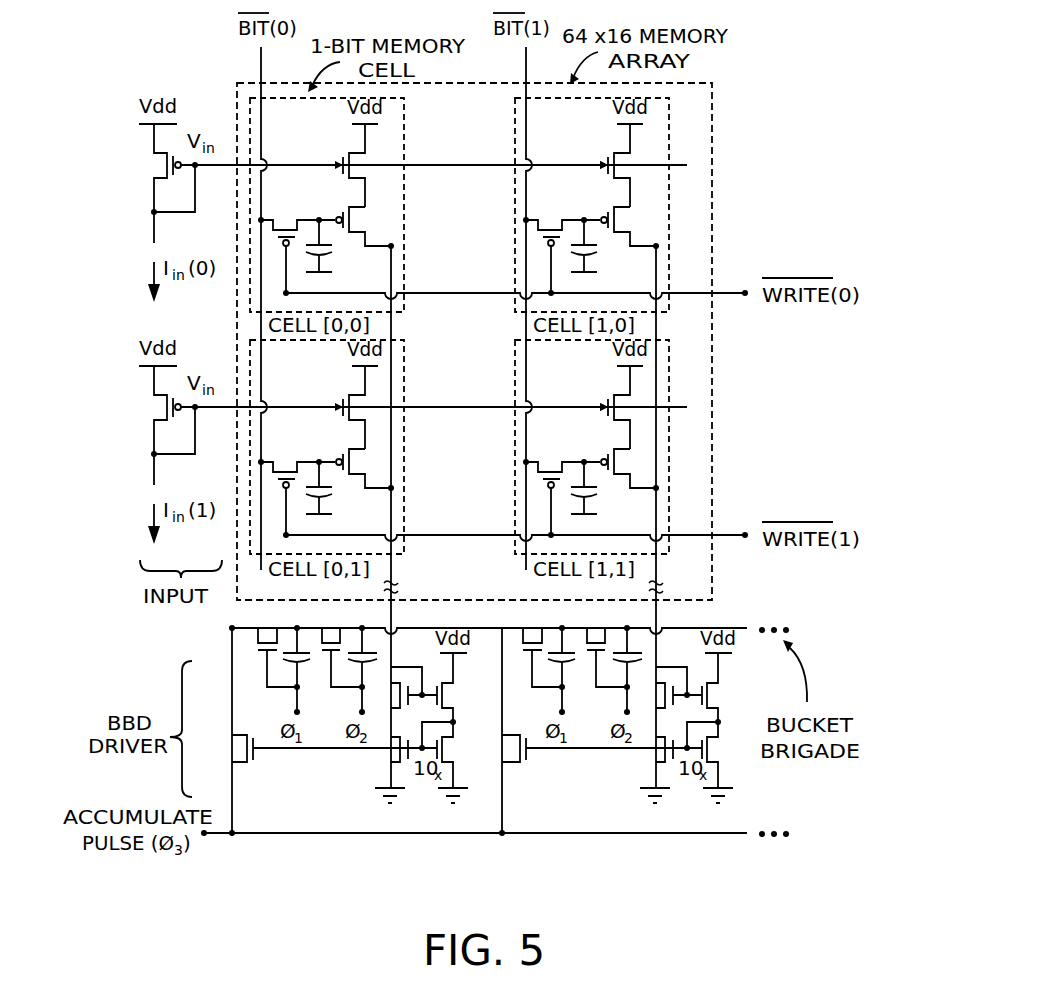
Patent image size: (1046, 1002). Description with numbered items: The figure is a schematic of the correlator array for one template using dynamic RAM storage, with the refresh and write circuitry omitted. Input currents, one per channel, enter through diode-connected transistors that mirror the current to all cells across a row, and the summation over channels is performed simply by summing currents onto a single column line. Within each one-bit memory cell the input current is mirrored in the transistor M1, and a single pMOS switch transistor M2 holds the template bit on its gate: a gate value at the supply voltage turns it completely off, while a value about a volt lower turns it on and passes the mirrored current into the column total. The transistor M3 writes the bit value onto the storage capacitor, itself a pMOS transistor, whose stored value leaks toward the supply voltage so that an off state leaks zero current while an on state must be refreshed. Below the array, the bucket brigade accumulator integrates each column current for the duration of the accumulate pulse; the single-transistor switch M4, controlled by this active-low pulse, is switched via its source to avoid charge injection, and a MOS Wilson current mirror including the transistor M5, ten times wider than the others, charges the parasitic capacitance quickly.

The mirror transistor M1 is at (364, 151).
The pMOS switch transistor M2 is at (365, 227).
The write transistor M3 is at (296, 242).
The single-transistor integration switch M4 is at (317, 730).
The wide Wilson mirror transistor M5 is at (372, 714).